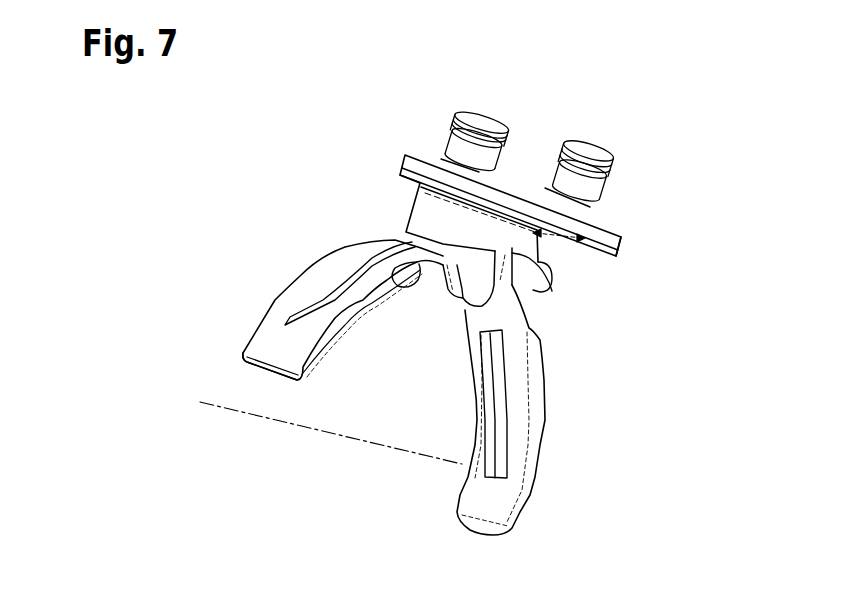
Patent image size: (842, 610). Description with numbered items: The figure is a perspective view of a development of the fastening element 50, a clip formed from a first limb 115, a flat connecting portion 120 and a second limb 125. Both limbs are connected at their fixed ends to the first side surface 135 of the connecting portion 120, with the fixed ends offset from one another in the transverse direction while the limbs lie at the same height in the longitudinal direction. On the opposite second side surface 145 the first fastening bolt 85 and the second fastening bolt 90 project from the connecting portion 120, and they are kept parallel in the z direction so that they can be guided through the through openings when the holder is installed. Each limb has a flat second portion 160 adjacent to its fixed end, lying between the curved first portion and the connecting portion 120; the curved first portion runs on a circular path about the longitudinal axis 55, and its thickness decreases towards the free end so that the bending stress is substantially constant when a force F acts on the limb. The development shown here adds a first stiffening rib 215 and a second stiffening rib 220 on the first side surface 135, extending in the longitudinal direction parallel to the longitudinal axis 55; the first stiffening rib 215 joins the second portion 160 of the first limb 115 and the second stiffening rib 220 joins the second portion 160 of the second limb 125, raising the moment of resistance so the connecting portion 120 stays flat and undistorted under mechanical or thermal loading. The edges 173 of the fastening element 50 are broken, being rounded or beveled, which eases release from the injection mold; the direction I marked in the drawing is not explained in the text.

The fastening element 50 is at (356, 490).
The longitudinal axis 55 is at (262, 415).
The first fastening bolt 85 is at (582, 172).
The second fastening bolt 90 is at (476, 145).
The first limb 115 is at (288, 308).
The connecting portion 120 is at (618, 234).
The second limb 125 is at (541, 483).
The first side surface 135 is at (605, 227).
The second side surface 145 is at (525, 175).
The second portion 160 is at (388, 281).
The edge 173 is at (246, 349).
The first stiffening rib 215 is at (510, 286).
The second stiffening rib 220 is at (535, 307).
The force F is at (477, 474).
The insertion direction I is at (406, 232).